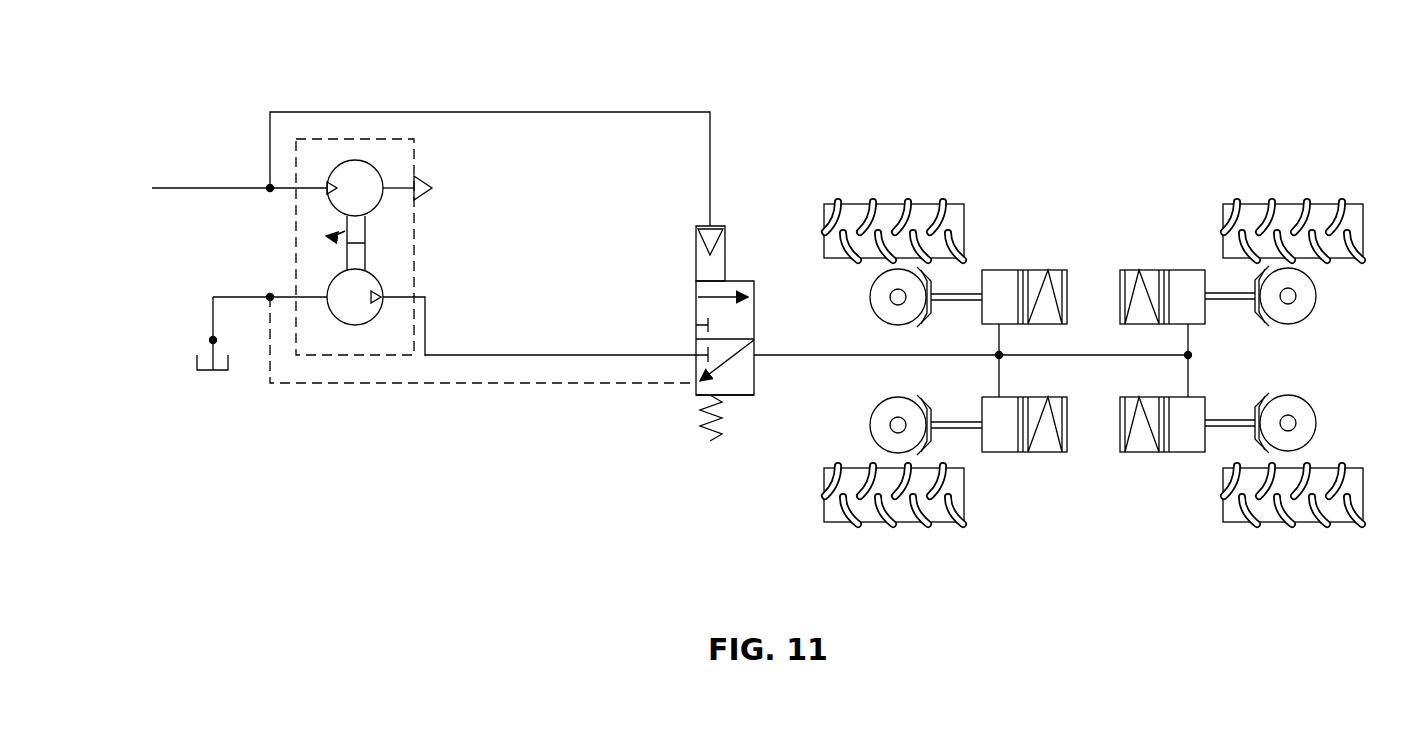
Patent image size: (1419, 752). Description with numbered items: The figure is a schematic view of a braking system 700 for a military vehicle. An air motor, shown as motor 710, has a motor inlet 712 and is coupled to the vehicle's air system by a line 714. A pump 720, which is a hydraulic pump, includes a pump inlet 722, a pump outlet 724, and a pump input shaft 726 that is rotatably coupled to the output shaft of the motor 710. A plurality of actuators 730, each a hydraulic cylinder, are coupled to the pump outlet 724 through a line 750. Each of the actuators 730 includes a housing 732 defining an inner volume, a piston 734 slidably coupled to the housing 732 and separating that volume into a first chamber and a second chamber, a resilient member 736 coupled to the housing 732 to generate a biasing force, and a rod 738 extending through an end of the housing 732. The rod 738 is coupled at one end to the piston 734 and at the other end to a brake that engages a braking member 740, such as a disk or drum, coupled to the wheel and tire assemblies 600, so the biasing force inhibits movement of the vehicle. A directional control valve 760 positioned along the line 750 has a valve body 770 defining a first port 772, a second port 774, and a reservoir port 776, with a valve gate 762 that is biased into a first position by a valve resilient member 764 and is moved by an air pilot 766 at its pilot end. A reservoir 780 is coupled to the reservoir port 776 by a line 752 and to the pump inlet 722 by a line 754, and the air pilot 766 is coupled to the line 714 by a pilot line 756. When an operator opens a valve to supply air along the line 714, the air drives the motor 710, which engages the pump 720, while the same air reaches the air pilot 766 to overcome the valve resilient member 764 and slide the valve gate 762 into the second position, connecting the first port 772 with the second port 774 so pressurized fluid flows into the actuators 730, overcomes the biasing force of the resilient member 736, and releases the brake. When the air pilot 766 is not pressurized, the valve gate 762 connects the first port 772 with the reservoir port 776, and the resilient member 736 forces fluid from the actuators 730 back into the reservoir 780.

The wheel and tire assemblies 600 is at (920, 204).
The braking system 700 is at (1155, 56).
The motor 710 is at (336, 206).
The motor inlet 712 is at (330, 186).
The line 714 is at (188, 188).
The pump 720 is at (355, 325).
The pump inlet 722 is at (294, 297).
The pump outlet 724 is at (416, 297).
The pump input shaft 726 is at (360, 262).
The actuators 730 is at (997, 228).
The housing 732 is at (1120, 293).
The piston 734 is at (1020, 270).
The resilient member 736 is at (1120, 270).
The rod 738 is at (965, 302).
The braking member 740 is at (898, 308).
The line 750 is at (528, 355).
The line 752 is at (432, 384).
The line 754 is at (213, 318).
The pilot line 756 is at (490, 112).
The directional control valve 760 is at (735, 268).
The valve gate 762 is at (742, 316).
The valve resilient member 764 is at (712, 437).
The air pilot 766 is at (705, 270).
The valve body 770 is at (742, 397).
The first port 772 is at (754, 352).
The second port 774 is at (696, 354).
The reservoir port 776 is at (696, 385).
The reservoir 780 is at (218, 372).